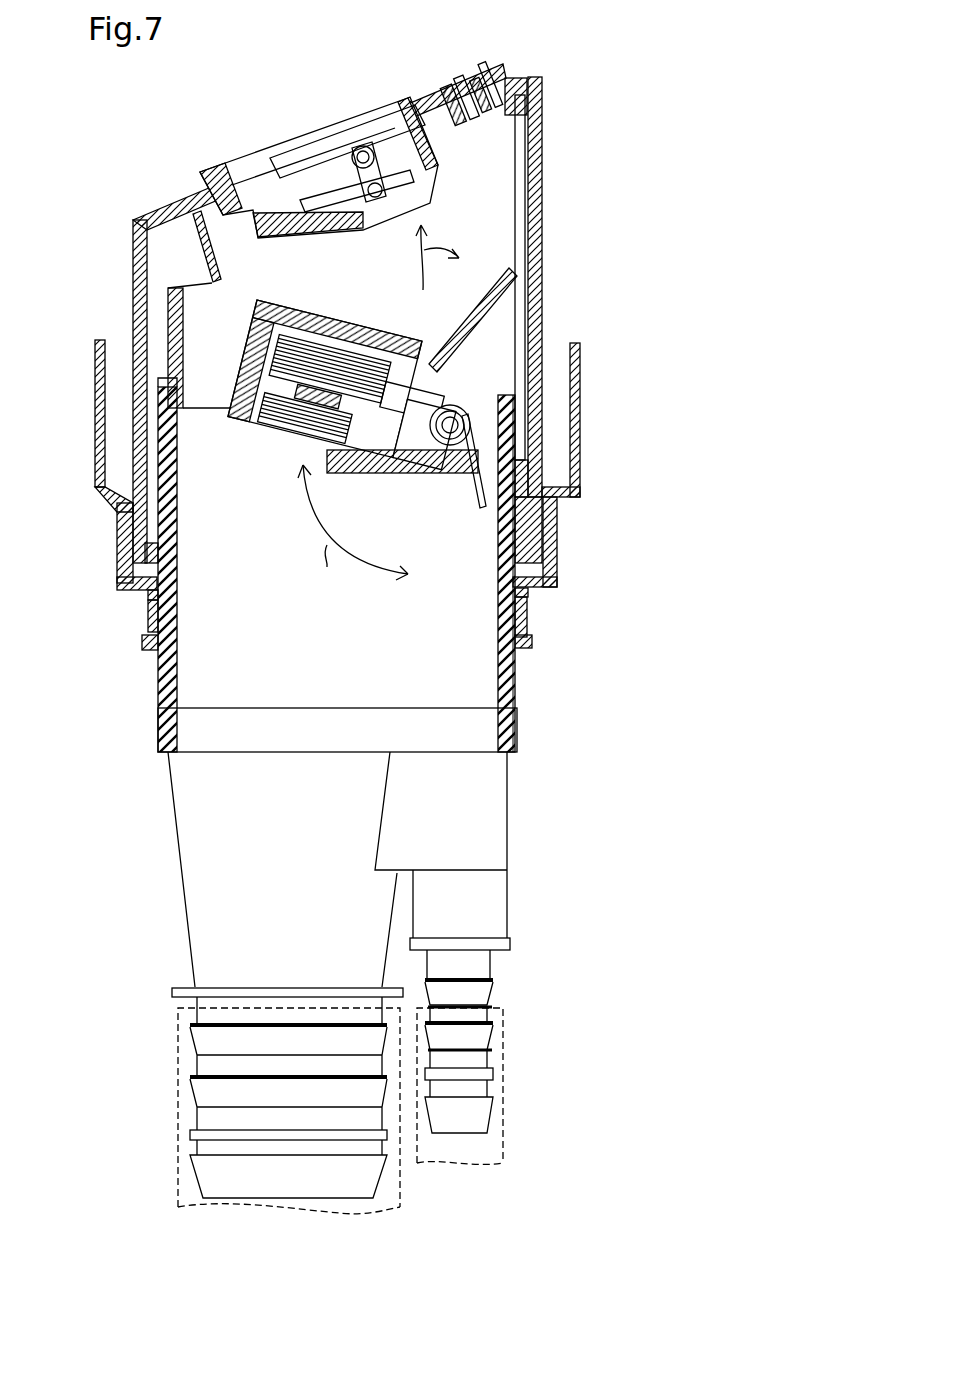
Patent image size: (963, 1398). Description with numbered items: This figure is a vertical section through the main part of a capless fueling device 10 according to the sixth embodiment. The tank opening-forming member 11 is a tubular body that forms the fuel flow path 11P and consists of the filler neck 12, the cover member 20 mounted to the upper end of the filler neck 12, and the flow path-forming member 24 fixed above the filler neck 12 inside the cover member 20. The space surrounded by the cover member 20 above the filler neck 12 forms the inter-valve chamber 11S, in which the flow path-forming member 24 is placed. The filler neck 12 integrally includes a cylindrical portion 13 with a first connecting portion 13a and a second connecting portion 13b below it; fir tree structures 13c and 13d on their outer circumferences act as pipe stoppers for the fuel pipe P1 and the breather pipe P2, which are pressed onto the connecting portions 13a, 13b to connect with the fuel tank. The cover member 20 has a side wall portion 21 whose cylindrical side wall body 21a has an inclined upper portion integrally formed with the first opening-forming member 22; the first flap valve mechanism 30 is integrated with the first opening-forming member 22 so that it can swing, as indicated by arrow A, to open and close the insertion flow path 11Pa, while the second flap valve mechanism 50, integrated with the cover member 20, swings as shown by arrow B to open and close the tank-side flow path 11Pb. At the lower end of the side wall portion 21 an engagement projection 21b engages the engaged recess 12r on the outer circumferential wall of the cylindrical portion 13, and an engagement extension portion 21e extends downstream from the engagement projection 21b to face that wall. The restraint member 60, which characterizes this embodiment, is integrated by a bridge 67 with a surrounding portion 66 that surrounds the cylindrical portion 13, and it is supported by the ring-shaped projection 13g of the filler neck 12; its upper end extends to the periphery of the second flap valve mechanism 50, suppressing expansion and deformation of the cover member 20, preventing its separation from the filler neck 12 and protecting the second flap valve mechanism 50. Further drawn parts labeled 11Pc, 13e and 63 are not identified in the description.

The liquid ejecting apparatus 10 is at (158, 200).
The tank opening-forming member 11 is at (716, 339).
The insertion flow path 11Pa is at (385, 279).
The tank-side flow path 11Pb is at (328, 637).
The fuel flow path 11P is at (331, 268).
The inner wall 11Pc is at (515, 315).
The inter-valve chamber 11S is at (490, 233).
The filler neck 12 is at (525, 605).
The engaged recess 12r is at (177, 513).
The cylindrical portion 13 is at (507, 690).
The first connecting portion 13a is at (313, 817).
The second connecting portion 13b is at (477, 907).
The fir tree structure 13c is at (190, 1024).
The fir tree structure 13d is at (493, 1027).
The bracket 13e is at (172, 440).
The ring-shaped projection 13g is at (142, 642).
The cover member 20 is at (540, 397).
The side wall portion 21 is at (77, 425).
The side wall body 21a is at (133, 362).
The engagement projection 21b is at (178, 464).
The engagement extension portion 21e is at (175, 563).
The first opening-forming member 22 is at (528, 70).
The flow path-forming member 24 is at (480, 327).
The first flap valve mechanism 30 is at (245, 232).
The second flap valve mechanism 50 is at (203, 335).
The restraint member 60 is at (118, 530).
The side wall 63 is at (133, 447).
The surrounding portion 66 is at (150, 617).
The bridge 67 is at (145, 593).
The fuel pipe P1 is at (178, 1085).
The breather pipe P2 is at (503, 1093).
The arrow A is at (437, 266).
The arrow B is at (353, 532).